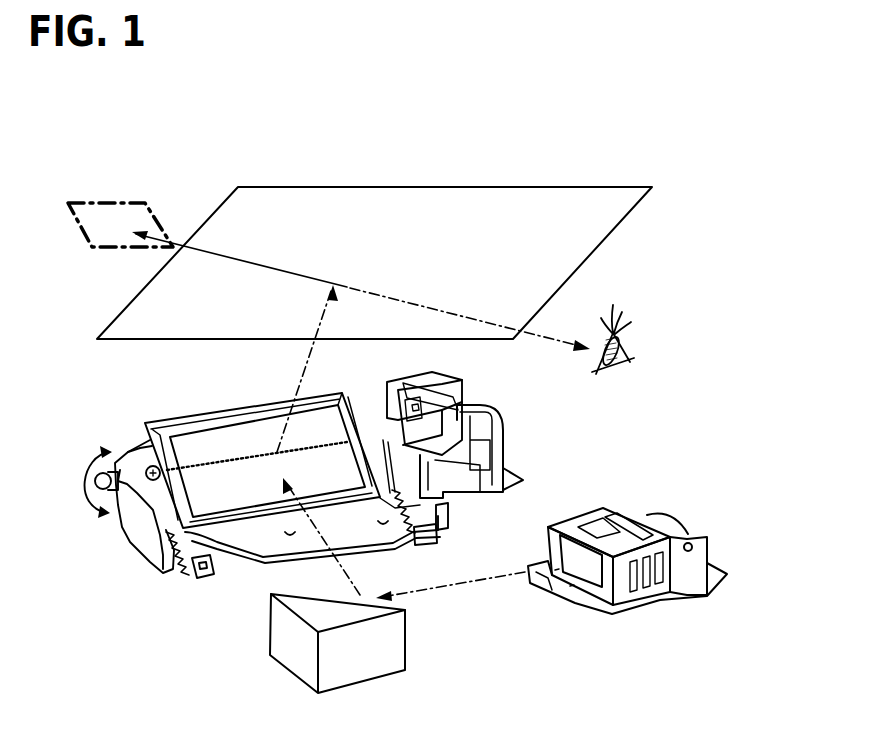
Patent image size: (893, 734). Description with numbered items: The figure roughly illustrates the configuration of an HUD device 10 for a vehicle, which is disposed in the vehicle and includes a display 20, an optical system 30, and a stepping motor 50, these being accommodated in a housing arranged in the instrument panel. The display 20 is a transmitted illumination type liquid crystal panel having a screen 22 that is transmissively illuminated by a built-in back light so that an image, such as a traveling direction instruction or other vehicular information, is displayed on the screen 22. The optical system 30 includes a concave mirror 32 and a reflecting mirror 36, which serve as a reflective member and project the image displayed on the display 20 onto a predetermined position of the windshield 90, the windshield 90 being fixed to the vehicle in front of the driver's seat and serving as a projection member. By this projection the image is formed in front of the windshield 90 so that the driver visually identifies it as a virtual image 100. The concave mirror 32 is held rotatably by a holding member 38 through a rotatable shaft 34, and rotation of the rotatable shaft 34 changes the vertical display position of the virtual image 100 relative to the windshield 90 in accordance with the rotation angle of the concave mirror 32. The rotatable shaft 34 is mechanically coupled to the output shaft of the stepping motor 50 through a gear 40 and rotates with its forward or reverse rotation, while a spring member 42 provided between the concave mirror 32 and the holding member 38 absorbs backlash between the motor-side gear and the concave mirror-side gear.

The HUD device 10 is at (694, 413).
The display 20 is at (628, 576).
The screen 22 is at (592, 568).
The optical system 30 is at (214, 662).
The concave mirror 32 is at (183, 430).
The rotatable shaft 34 is at (260, 452).
The reflecting mirror 36 is at (258, 620).
The holding member 38 is at (140, 540).
The gear 40 is at (397, 380).
The spring member 42 is at (195, 574).
The stepping motor 50 is at (512, 411).
The windshield 90 is at (507, 202).
The virtual image 100 is at (140, 202).